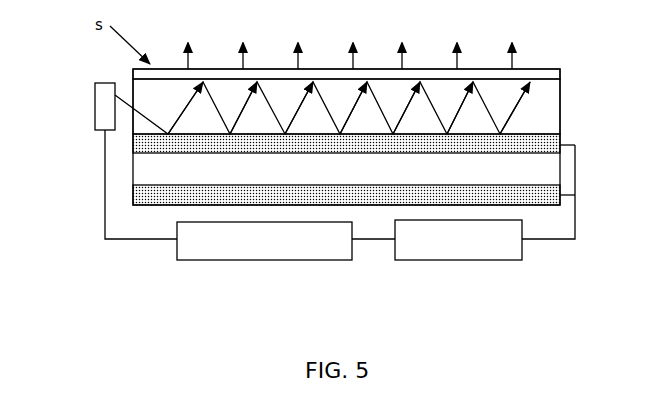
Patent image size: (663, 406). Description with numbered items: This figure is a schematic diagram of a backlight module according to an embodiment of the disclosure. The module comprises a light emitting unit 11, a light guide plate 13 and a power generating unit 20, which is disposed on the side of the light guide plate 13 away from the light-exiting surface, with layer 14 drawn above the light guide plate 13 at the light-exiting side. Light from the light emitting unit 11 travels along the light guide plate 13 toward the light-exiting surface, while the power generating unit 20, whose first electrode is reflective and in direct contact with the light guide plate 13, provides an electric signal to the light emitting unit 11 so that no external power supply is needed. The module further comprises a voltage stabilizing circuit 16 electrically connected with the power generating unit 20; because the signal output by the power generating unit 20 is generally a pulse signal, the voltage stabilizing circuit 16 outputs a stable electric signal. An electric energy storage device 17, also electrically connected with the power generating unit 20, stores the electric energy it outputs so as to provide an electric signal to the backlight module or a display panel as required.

The light emitting unit 11 is at (94, 108).
The light guide plate 13 is at (552, 102).
The top layer 14 is at (565, 71).
The voltage stabilizing circuit 16 is at (460, 262).
The electric energy storage device 17 is at (262, 262).
The power generating unit 20 is at (585, 133).